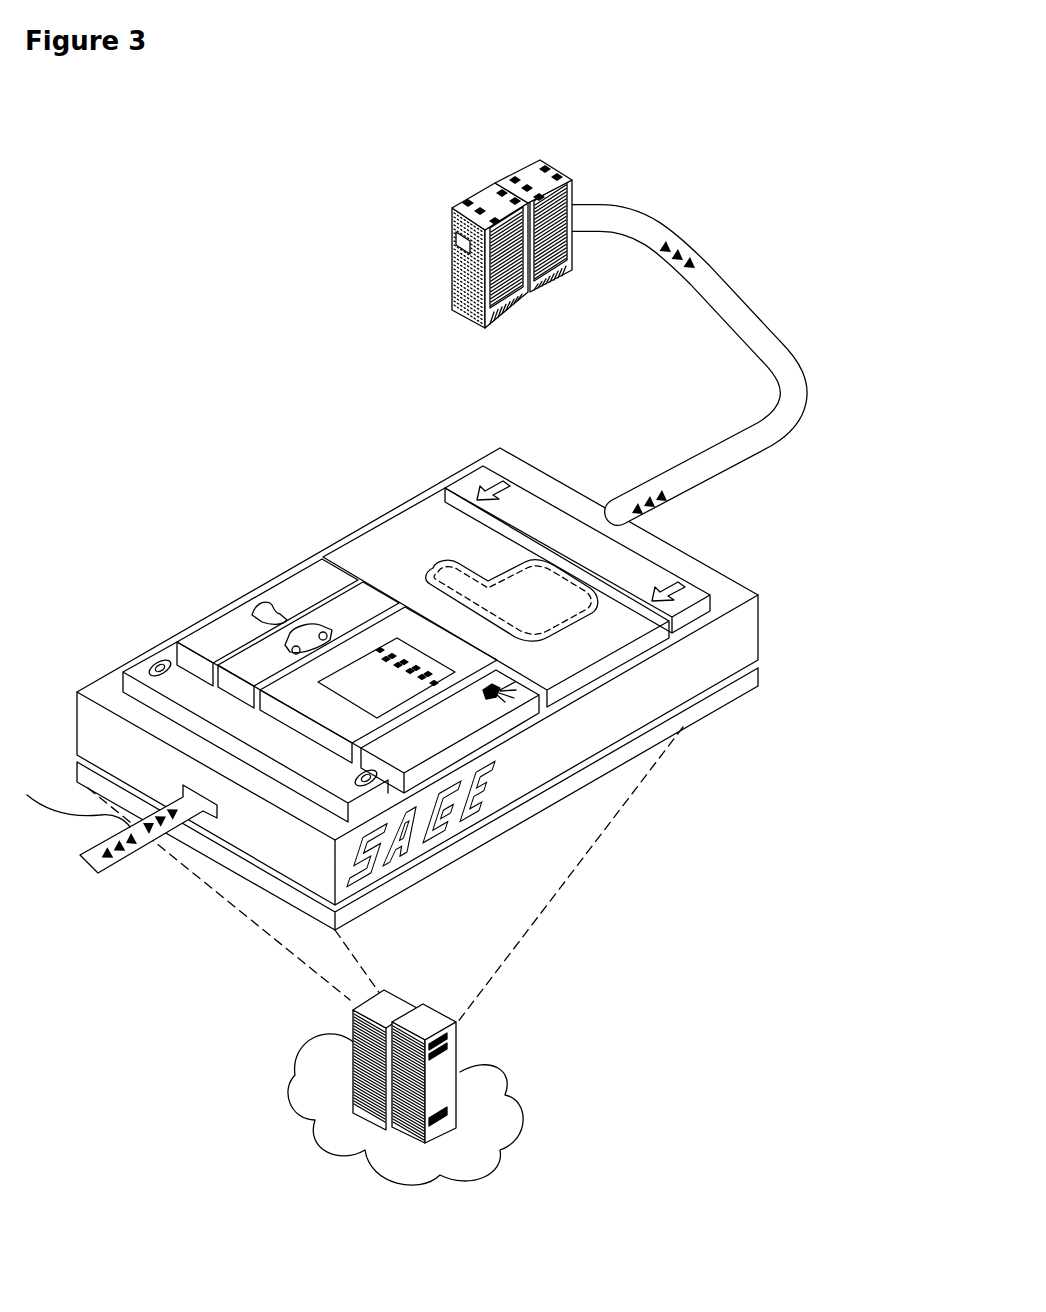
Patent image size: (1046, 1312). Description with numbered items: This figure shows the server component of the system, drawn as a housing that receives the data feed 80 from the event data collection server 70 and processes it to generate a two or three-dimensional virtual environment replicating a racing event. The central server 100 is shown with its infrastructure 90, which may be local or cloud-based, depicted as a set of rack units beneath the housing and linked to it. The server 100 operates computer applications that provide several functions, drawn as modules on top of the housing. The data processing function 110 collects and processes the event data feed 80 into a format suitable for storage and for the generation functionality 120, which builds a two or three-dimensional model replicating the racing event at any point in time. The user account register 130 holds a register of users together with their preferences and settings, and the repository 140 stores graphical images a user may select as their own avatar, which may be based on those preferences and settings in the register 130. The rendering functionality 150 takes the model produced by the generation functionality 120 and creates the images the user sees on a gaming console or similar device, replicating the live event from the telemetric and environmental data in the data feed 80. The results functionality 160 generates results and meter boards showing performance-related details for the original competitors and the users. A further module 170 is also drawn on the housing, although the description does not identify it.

The event data collection server 70 is at (452, 300).
The data feed 80 is at (743, 295).
The infrastructure 90 is at (700, 710).
The server 100 is at (728, 642).
The data processing function 110 is at (563, 522).
The virtual environment generation functionality 120 is at (428, 525).
The user account register 130 is at (207, 640).
The repository of graphical images 140 is at (313, 627).
The rendering functionality 150 is at (400, 633).
The results and meter board functionality 160 is at (477, 717).
The cash module 170 is at (177, 688).